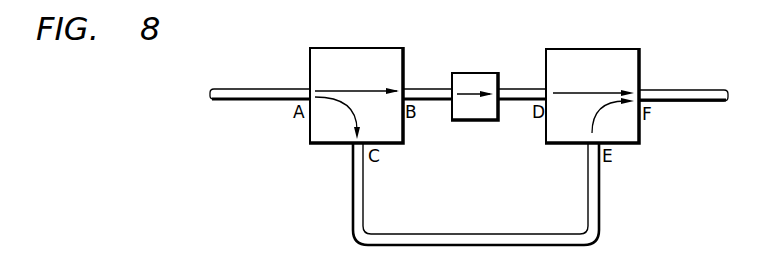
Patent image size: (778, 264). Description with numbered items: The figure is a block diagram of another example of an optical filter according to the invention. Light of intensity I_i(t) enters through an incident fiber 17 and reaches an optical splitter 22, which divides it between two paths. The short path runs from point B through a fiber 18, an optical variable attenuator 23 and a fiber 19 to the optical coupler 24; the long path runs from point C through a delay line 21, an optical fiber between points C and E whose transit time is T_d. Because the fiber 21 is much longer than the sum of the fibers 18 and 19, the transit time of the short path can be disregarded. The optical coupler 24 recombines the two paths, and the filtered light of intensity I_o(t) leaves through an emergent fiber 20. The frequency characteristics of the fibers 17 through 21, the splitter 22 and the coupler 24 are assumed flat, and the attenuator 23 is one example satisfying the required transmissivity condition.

The incident fiber 17 is at (243, 100).
The fiber 18 is at (435, 100).
The fiber 19 is at (521, 88).
The emergent fiber 20 is at (697, 102).
The delay line 21 is at (600, 219).
The optical splitter 22 is at (371, 47).
The optical variable attenuator 23 is at (475, 71).
The optical coupler 24 is at (599, 48).